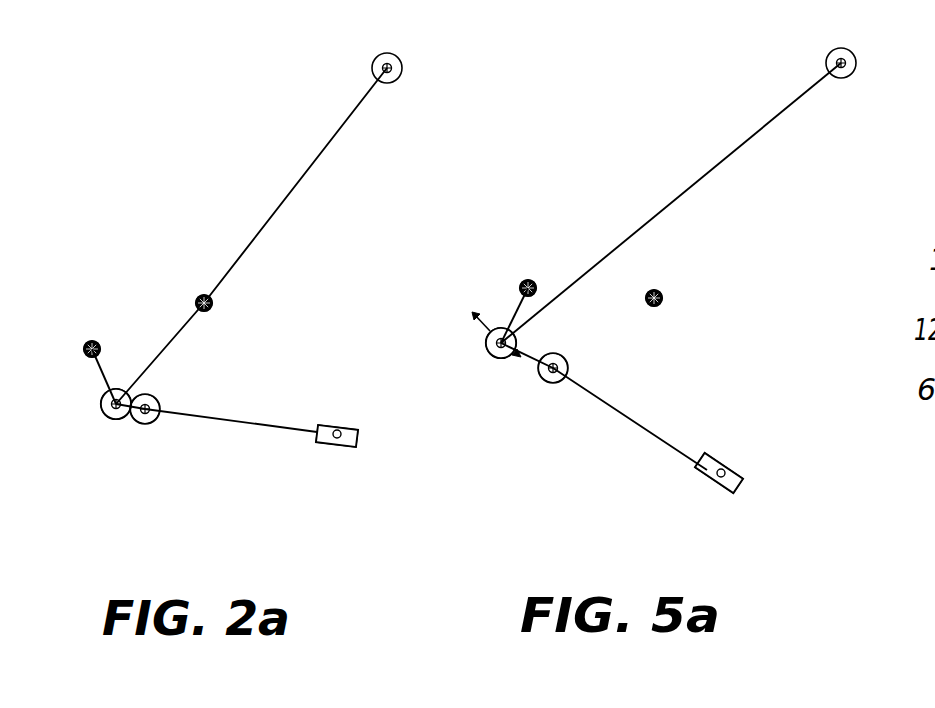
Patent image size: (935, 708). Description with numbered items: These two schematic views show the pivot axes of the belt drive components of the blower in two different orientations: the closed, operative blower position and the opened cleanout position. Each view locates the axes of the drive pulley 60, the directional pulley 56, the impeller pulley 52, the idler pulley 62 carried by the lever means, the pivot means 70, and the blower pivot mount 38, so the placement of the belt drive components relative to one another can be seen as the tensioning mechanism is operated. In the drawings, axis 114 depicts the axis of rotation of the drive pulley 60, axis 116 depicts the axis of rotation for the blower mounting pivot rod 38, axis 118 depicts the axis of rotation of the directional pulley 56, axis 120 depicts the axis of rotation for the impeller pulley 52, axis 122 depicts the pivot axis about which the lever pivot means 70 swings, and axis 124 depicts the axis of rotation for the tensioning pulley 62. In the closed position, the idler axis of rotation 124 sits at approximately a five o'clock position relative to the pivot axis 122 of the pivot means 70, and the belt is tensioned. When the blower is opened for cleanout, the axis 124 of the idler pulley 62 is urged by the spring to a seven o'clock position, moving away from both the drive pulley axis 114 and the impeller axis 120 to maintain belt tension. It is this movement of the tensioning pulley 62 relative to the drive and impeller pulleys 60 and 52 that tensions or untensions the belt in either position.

In FIG. 2A, the blower pivot mount 38 is at (209, 310).
In FIG. 5A, the blower pivot mount 38 is at (660, 291).
In FIG. 2A, the impeller pulley 52 is at (323, 445).
In FIG. 5A, the impeller pulley 52 is at (733, 493).
In FIG. 2A, the directional pulley 56 is at (147, 423).
In FIG. 5A, the directional pulley 56 is at (567, 371).
In FIG. 2A, the drive pulley 60 is at (397, 82).
In FIG. 5A, the drive pulley 60 is at (841, 78).
In FIG. 2A, the idler pulley 62 is at (113, 419).
In FIG. 5A, the idler pulley 62 is at (496, 357).
In FIG. 2A, the pivot means 70 is at (97, 343).
In FIG. 5A, the pivot means 70 is at (533, 281).
In FIG. 2A, the axis of rotation of the drive pulley 114 is at (400, 57).
In FIG. 5A, the axis of rotation of the drive pulley 114 is at (853, 54).
In FIG. 2A, the axis of rotation for the blower mounting pivot rod 116 is at (211, 297).
In FIG. 5A, the axis of rotation for the blower mounting pivot rod 116 is at (658, 307).
In FIG. 2A, the axis of rotation of the directional pulley 118 is at (155, 398).
In FIG. 5A, the axis of rotation of the directional pulley 118 is at (558, 355).
In FIG. 2A, the axis of rotation for the impeller pulley 120 is at (340, 429).
In FIG. 5A, the axis of rotation for the impeller pulley 120 is at (726, 470).
In FIG. 2A, the pivot axis for the lever pivot means 122 is at (88, 342).
In FIG. 5A, the pivot axis for the lever pivot means 122 is at (522, 282).
In FIG. 2A, the axis of rotation for the tensioning pulley 124 is at (102, 411).
In FIG. 5A, the axis of rotation for the tensioning pulley 124 is at (487, 350).